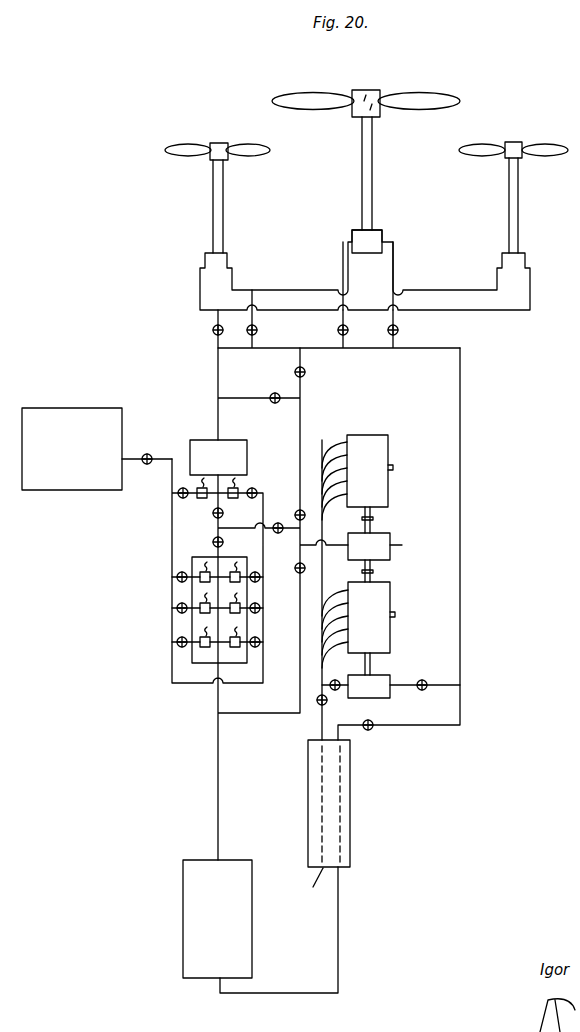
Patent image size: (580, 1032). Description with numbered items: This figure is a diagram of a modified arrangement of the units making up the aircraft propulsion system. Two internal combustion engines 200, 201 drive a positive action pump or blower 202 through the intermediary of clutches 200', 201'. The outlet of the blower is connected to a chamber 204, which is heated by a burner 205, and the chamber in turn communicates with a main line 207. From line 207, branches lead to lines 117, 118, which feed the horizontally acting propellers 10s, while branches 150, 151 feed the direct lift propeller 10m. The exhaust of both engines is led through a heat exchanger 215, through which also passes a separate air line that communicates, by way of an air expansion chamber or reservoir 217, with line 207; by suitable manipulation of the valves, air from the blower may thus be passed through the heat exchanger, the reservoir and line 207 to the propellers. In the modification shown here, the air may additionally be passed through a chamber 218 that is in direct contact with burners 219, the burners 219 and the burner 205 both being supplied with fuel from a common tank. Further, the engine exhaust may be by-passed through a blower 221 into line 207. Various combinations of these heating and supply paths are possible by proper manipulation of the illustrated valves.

The direct lift propeller 10m is at (335, 90).
The horizontally acting propellers 10s is at (201, 131).
The line 118 is at (426, 294).
The branch 150 is at (394, 257).
The branch 151 is at (343, 274).
The line 117 is at (322, 310).
The internal combustion engine 200 is at (207, 457).
The chamber 204 is at (218, 457).
The burner 205 is at (233, 502).
The chamber 218 is at (205, 650).
The burners 219 is at (233, 612).
The line 207 is at (462, 446).
The clutch 200' is at (396, 517).
The positive action pump or blower 202 is at (383, 549).
The clutch 201' is at (396, 567).
The internal combustion engine 201 is at (371, 617).
The blower 221 is at (382, 684).
The heat exchanger 215 is at (352, 841).
The air expansion chamber or reservoir 217 is at (253, 923).